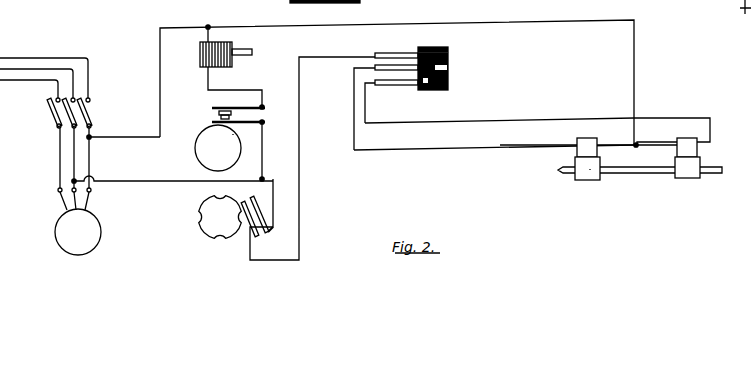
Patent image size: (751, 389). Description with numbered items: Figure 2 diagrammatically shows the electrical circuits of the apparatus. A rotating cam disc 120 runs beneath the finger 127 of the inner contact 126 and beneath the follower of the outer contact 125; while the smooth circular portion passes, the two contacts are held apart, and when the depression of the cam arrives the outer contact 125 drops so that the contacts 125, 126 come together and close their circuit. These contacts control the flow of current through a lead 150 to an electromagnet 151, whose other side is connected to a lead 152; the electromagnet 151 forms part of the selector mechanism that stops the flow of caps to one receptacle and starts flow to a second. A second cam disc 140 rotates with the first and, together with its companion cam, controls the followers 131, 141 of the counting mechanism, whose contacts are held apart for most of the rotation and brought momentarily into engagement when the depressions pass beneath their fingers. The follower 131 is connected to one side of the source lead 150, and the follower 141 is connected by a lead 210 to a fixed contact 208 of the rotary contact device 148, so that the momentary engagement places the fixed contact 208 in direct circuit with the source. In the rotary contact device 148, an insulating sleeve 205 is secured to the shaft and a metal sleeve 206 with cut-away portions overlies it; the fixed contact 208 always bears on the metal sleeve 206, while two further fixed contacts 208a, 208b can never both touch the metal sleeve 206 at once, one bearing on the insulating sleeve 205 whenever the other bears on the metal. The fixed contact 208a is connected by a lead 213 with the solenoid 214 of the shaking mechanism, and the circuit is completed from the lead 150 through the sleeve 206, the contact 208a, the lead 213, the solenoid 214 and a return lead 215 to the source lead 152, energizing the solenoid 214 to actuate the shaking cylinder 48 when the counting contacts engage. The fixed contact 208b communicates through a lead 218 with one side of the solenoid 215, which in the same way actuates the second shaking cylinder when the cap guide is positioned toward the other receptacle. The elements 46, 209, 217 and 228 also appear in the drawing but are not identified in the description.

The terminal block 46 is at (682, 179).
The shaking cylinder 48 is at (590, 171).
The cam disc 120 is at (193, 155).
The outer contact 125 is at (212, 108).
The inner contact 126 is at (212, 122).
The finger 127 is at (233, 135).
The follower 131 is at (262, 211).
The cam disc 140 is at (197, 221).
The follower 141 is at (249, 223).
The rotary contact device 148 is at (448, 52).
The lead 150 is at (148, 183).
The electromagnet 151 is at (200, 62).
The lead 152 is at (183, 27).
The insulating sleeve 205 is at (448, 68).
The metal sleeve 206 is at (423, 91).
The fixed contact 208 is at (390, 53).
The fixed contact 208a is at (378, 60).
The fixed contact 208b is at (397, 86).
The conductor 209 is at (588, 20).
The lead 210 is at (302, 234).
The lead 213 is at (481, 146).
The solenoid 214 is at (582, 138).
The solenoid 215 is at (634, 76).
The main switch 217 is at (95, 128).
The lead 218 is at (520, 111).
The rod 228 is at (643, 174).